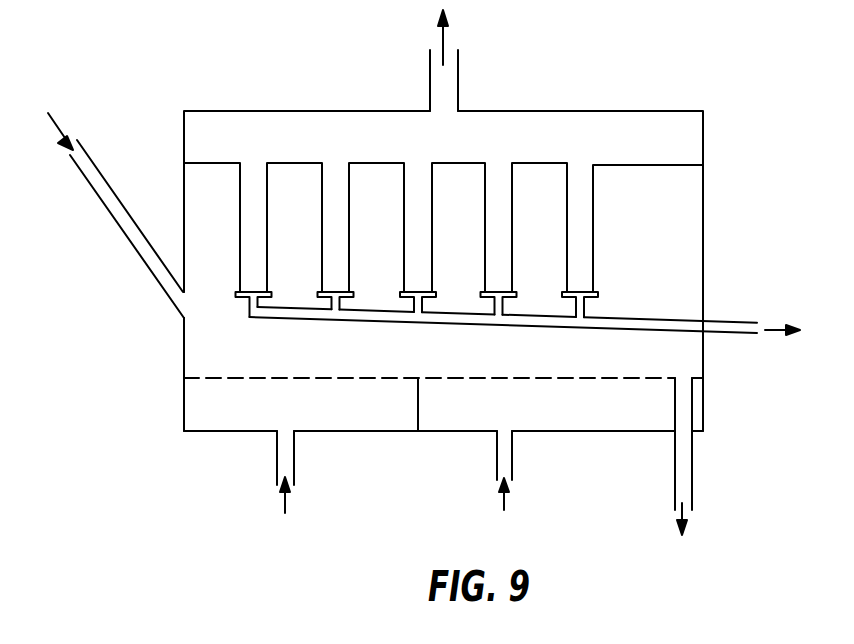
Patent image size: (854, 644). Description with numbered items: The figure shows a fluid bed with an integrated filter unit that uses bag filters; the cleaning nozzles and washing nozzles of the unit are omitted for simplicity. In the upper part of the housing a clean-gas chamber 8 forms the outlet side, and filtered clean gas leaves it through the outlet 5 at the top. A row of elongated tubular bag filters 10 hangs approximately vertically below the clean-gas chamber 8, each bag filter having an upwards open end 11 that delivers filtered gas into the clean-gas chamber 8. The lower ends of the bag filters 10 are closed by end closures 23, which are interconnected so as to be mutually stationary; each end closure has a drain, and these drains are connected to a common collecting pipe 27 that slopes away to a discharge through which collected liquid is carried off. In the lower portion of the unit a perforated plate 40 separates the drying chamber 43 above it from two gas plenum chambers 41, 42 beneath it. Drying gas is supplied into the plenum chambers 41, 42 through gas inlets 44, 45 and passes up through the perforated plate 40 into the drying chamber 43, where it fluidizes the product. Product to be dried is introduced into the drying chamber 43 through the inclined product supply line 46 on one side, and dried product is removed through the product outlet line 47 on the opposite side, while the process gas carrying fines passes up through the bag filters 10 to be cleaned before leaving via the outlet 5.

The outlet 5 is at (460, 77).
The clean-gas chamber 8 is at (550, 130).
The bag filters 10 is at (240, 183).
The upwards open ends 11 is at (582, 170).
The end closures 23 is at (273, 295).
The collecting pipe 27 is at (618, 318).
The perforated plate 40 is at (305, 378).
The gas plenum chamber 41 is at (350, 410).
The gas plenum chamber 42 is at (592, 415).
The drying chamber 43 is at (206, 344).
The gas inlet 44 is at (277, 450).
The gas inlet 45 is at (512, 462).
The product supply line 46 is at (112, 188).
The product outlet line 47 is at (692, 472).